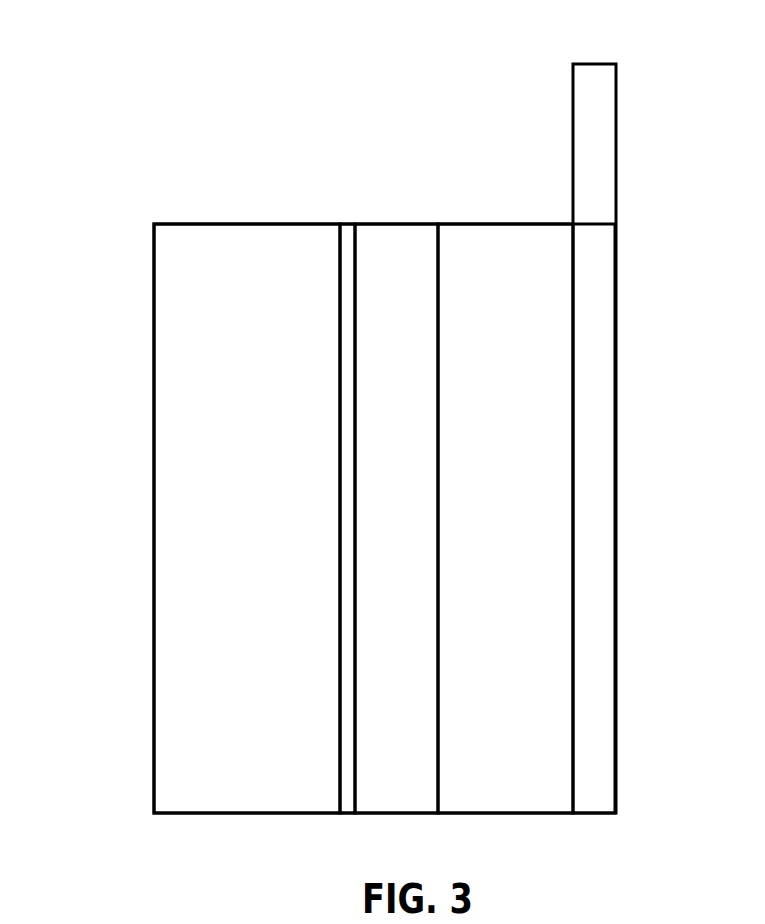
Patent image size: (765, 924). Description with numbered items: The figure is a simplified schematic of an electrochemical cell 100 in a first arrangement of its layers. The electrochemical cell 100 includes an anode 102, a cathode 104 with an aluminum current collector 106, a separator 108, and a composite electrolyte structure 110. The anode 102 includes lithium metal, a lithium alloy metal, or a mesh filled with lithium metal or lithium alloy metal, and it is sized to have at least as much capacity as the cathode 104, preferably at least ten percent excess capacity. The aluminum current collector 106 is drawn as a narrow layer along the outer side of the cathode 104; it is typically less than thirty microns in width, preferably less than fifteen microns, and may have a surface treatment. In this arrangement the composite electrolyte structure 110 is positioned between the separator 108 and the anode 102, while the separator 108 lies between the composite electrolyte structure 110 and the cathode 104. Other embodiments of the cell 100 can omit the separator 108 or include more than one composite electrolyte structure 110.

The electrochemical cell 100 is at (108, 160).
The anode 102 is at (210, 256).
The cathode 104 is at (506, 269).
The aluminum current collector 106 is at (606, 183).
The separator 108 is at (402, 250).
The composite electrolyte structure 110 is at (346, 260).